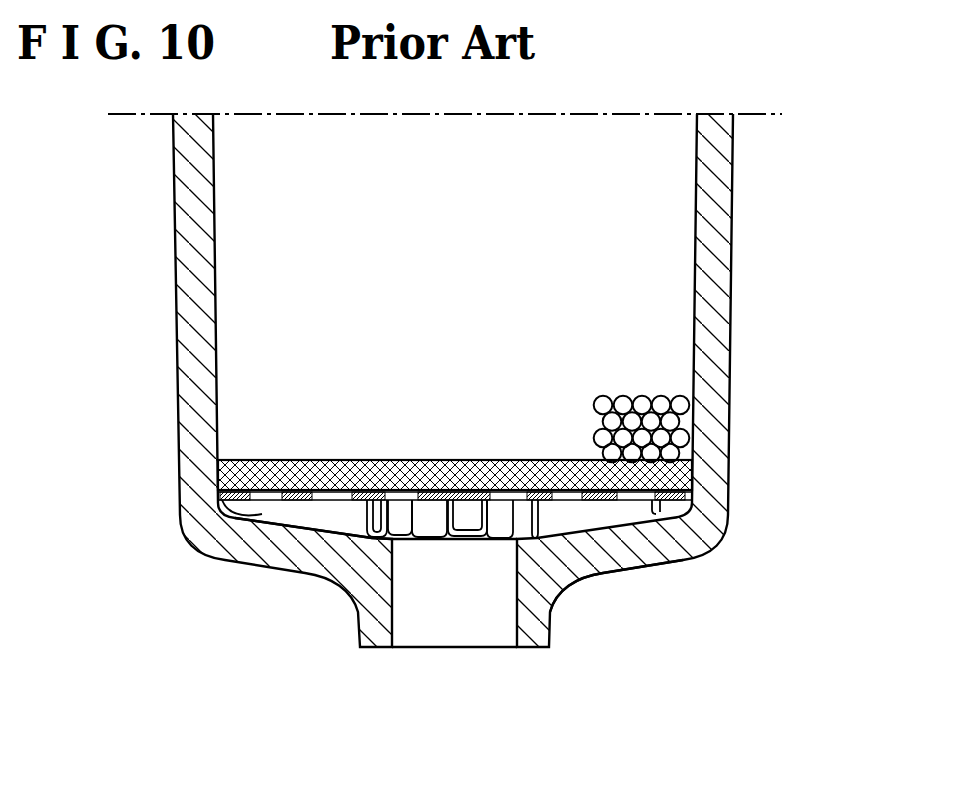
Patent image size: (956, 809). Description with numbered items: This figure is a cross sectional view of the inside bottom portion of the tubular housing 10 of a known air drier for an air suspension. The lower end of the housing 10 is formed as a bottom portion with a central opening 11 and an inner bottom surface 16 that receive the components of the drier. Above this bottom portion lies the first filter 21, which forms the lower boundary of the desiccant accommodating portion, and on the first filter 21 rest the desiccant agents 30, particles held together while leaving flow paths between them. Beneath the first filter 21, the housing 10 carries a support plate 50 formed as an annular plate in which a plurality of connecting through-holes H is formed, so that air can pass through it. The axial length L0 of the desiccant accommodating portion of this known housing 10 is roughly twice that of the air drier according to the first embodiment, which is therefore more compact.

The housing 10 is at (733, 223).
The bottom opening 11 is at (396, 592).
The inner bottom surface 16 is at (323, 513).
The first filter 21 is at (677, 477).
The desiccant agents 30 is at (658, 405).
The support plate 50 is at (660, 557).
The connecting through-holes H is at (570, 500).
The axial length of desiccant accommodating portion L0 is at (125, 114).